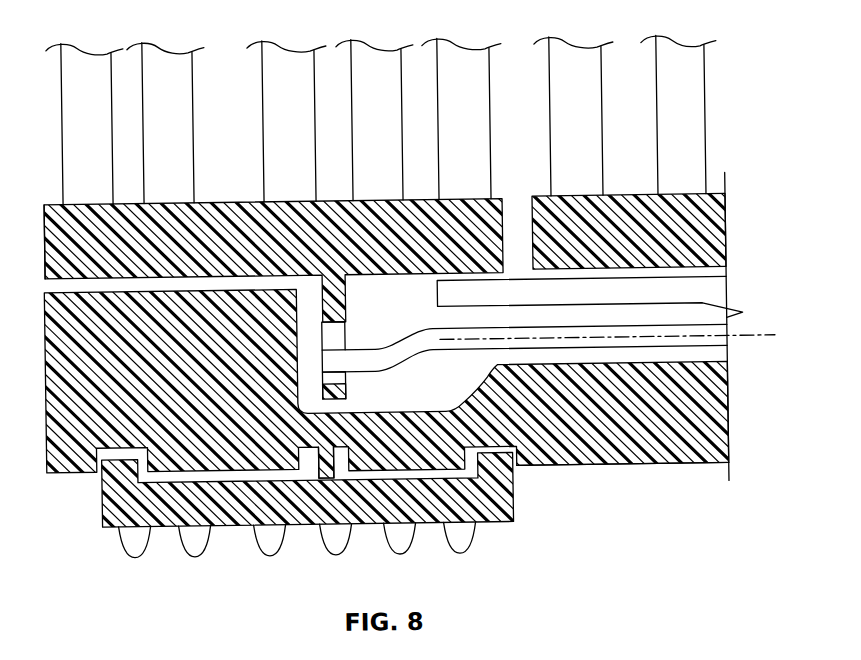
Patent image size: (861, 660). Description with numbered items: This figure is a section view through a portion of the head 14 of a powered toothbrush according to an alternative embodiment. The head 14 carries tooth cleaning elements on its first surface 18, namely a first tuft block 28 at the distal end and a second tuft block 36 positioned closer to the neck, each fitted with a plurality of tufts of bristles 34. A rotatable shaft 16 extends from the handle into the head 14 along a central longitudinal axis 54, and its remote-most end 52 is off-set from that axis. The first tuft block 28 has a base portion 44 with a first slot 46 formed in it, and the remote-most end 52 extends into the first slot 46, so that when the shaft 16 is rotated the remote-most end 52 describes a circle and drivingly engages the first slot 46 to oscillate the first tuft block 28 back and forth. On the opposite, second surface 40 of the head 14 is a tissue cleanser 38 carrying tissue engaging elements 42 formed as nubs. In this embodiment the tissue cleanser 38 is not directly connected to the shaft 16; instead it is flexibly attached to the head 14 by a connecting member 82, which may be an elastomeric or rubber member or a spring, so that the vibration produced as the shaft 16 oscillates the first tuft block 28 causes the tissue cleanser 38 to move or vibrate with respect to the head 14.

The head 14 is at (708, 397).
The shaft 16 is at (628, 327).
The first surface 18 is at (227, 200).
The first tuft block 28 is at (45, 242).
The tufts of bristles 34 is at (700, 129).
The second tuft block 36 is at (700, 244).
The tissue cleanser 38 is at (492, 508).
The second surface 40 is at (652, 469).
The tissue engaging elements 42 is at (134, 541).
The base portion 44 is at (343, 384).
The first slot 46 is at (333, 376).
The remote-most end 52 is at (390, 357).
The central longitudinal axis 54 is at (753, 337).
The connecting member 82 is at (321, 469).